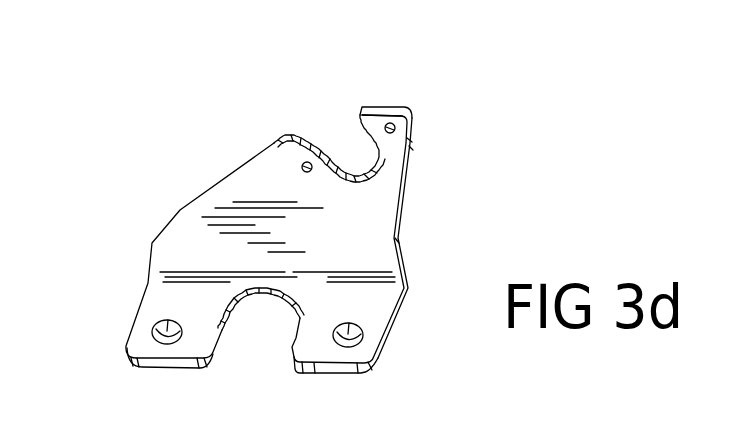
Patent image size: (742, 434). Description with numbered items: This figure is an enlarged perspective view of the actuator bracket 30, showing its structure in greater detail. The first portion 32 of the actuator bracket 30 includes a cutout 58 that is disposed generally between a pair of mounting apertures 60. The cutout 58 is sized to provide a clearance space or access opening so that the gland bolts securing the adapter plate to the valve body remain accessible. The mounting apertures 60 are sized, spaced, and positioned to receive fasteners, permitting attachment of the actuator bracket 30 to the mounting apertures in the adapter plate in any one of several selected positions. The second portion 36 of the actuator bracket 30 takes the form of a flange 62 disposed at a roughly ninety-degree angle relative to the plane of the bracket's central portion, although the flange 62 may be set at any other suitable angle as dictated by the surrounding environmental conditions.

The actuator bracket 30 is at (406, 244).
The first portion 32 is at (387, 104).
The second portion 36 is at (126, 345).
The cutout 58 is at (349, 165).
The mounting apertures 60 is at (301, 164).
The flange 62 is at (397, 347).